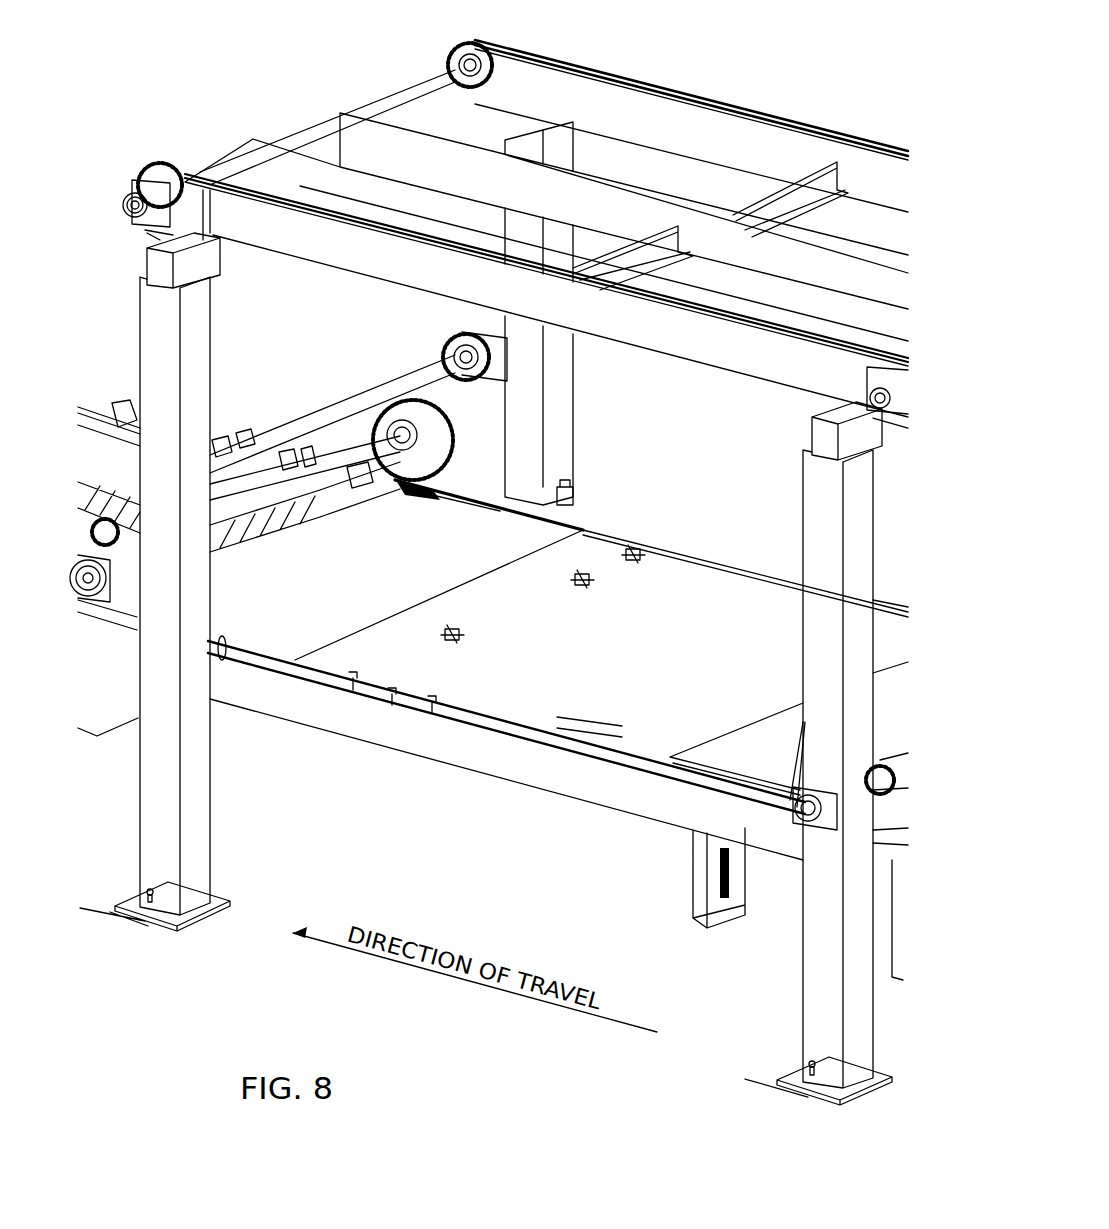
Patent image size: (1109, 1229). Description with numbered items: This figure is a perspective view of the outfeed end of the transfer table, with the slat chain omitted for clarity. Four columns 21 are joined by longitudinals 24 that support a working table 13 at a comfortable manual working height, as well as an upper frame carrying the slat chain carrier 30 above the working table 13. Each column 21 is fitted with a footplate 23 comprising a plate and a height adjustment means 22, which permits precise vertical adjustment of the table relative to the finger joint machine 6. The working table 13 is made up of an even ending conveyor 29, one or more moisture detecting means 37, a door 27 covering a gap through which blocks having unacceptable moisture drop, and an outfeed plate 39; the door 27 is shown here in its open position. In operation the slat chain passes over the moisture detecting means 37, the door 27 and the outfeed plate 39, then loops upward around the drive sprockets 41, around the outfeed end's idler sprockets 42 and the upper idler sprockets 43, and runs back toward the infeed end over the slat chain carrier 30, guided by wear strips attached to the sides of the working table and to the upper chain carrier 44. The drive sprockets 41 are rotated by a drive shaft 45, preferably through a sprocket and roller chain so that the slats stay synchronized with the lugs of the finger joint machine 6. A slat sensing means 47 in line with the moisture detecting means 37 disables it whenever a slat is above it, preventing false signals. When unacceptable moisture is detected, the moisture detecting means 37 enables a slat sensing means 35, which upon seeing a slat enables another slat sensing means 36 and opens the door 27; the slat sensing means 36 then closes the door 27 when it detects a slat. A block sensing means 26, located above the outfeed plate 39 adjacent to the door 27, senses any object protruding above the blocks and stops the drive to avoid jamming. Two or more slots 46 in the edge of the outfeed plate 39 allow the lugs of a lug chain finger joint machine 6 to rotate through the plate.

The finger joint machine 6 is at (98, 470).
The working table 13 is at (705, 655).
The column 21 is at (800, 982).
The height adjustment means 22 is at (802, 1062).
The footplate 23 is at (798, 1085).
The longitudinal 24 is at (585, 803).
The block sensing means 26 is at (574, 492).
The door 27 is at (562, 556).
The even ending conveyor 29 is at (771, 760).
The slat chain carrier 30 is at (718, 353).
The slat sensing means 35 is at (432, 712).
The slat sensing means 36 is at (392, 705).
The moisture detecting means 37 is at (592, 576).
The outfeed plate 39 is at (347, 583).
The drive sprocket 41 is at (397, 423).
The idler sprocket 42 is at (462, 336).
The upper idler sprocket 43 is at (157, 163).
The upper chain carrier 44 is at (690, 86).
The drive shaft 45 is at (332, 453).
The slot 46 is at (435, 503).
The slat sensing means 47 is at (353, 690).